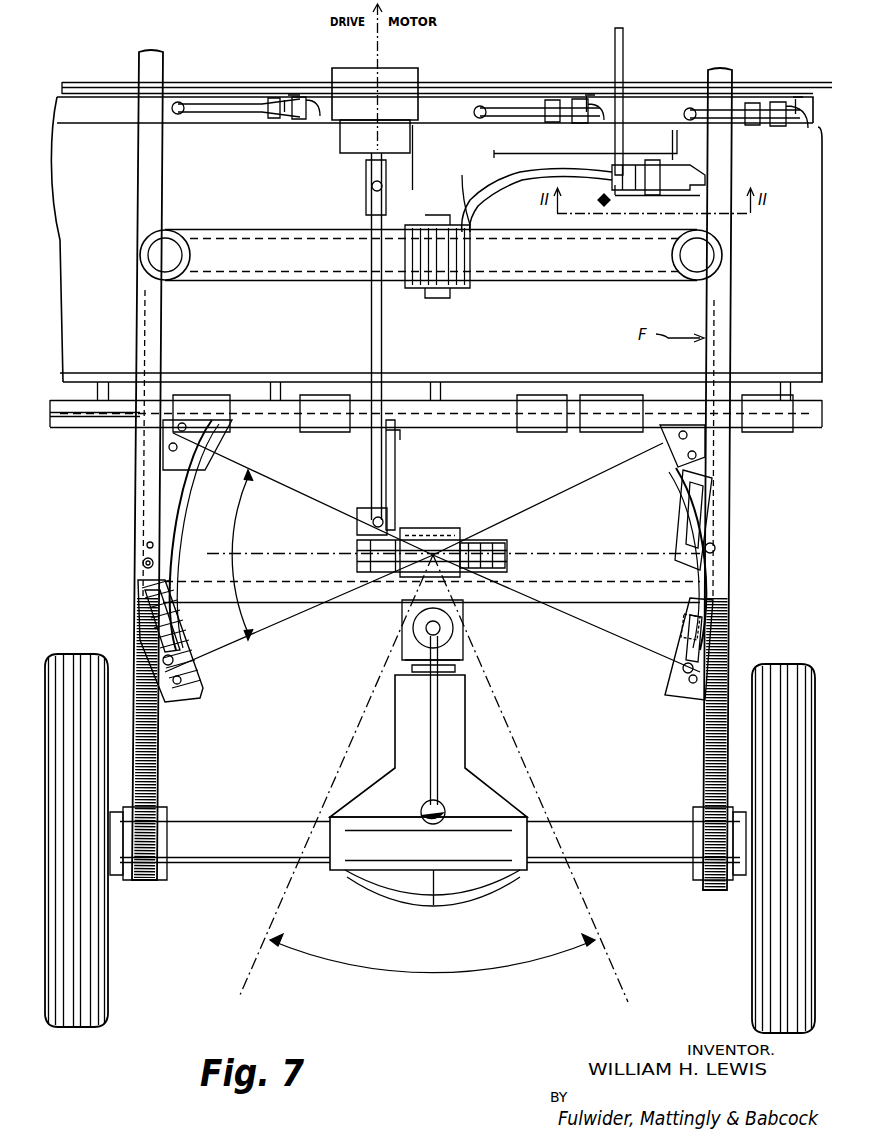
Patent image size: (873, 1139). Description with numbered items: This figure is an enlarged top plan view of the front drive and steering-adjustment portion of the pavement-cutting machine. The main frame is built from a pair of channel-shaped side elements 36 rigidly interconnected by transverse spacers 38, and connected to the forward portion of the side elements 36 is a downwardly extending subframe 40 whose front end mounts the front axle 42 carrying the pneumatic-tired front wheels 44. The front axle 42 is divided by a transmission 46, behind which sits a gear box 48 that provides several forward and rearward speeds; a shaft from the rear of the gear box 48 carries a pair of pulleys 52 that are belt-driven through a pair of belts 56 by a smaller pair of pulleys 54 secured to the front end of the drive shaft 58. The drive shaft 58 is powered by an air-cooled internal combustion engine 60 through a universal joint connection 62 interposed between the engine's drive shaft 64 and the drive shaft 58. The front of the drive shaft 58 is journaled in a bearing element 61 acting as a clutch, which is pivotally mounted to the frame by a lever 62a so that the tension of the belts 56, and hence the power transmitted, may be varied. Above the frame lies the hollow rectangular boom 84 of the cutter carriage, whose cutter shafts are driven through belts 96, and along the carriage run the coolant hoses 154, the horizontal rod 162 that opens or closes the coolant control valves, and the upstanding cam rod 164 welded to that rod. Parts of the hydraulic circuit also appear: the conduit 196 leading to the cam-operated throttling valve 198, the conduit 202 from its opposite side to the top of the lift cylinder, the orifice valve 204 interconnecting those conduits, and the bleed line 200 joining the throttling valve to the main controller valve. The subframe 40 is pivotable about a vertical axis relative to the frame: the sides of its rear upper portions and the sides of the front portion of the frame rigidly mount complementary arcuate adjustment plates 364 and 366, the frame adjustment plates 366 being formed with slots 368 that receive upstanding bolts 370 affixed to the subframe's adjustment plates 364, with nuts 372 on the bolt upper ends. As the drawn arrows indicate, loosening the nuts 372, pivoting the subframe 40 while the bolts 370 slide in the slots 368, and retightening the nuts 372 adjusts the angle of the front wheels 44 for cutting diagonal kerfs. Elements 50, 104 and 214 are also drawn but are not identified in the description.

The side elements 36 is at (160, 338).
The transverse spacers 38 is at (257, 590).
The subframe 40 is at (160, 760).
The front axle 42 is at (258, 822).
The front wheels 44 is at (108, 955).
The transmission 46 is at (490, 792).
The gear box 48 is at (455, 628).
The rod 50 is at (438, 722).
The pulleys 52 is at (357, 548).
The pulleys 54 is at (495, 550).
The belts 56 is at (455, 530).
The drive shaft 58 is at (382, 348).
The engine 60 is at (340, 148).
The bearing element 61 is at (370, 518).
The universal joint connection 62 is at (370, 190).
The lever 62a is at (398, 475).
The drive shaft 64 is at (366, 163).
The boom 84 is at (58, 251).
The belts 96 is at (110, 428).
The roller 104 is at (312, 280).
The hose 154 is at (222, 104).
The horizontal rod 162 is at (448, 82).
The cam rod 164 is at (288, 95).
The conduit 196 is at (592, 190).
The throttling valve 198 is at (700, 166).
The bleed line 200 is at (645, 197).
The conduit 202 is at (627, 55).
The orifice valve 204 is at (606, 206).
The bracket 214 is at (672, 146).
The adjustment plates 364 is at (680, 640).
The frame adjustment plates 366 is at (690, 698).
The slots 368 is at (682, 675).
The bolts 370 is at (716, 548).
The nuts 372 is at (156, 562).